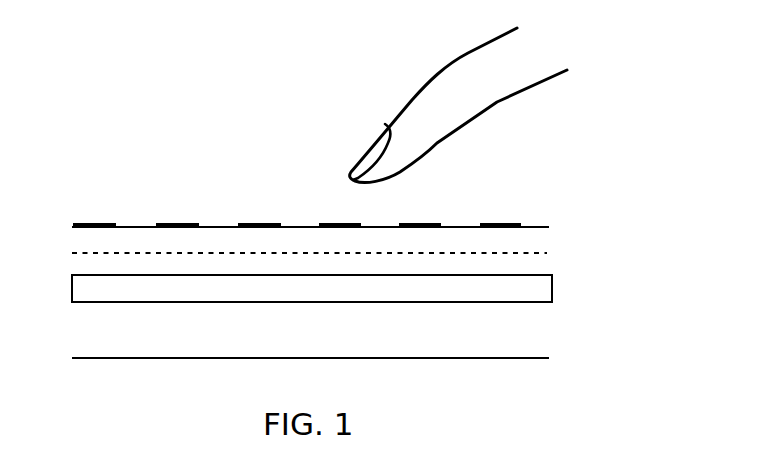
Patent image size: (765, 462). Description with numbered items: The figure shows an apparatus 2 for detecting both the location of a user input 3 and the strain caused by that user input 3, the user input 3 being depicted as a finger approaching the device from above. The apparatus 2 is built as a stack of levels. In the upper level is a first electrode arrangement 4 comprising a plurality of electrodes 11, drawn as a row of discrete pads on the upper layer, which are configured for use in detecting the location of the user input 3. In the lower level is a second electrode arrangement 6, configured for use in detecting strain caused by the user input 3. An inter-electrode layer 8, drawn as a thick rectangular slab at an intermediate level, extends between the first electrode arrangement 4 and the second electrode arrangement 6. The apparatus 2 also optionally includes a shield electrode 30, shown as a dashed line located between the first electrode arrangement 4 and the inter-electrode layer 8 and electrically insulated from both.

The apparatus 2 is at (658, 187).
The user input 3 is at (410, 98).
The first electrode arrangement 4 is at (72, 227).
The second electrode arrangement 6 is at (72, 358).
The inter-electrode layer 8 is at (72, 282).
The electrodes 11 is at (94, 223).
The shield electrode 30 is at (548, 257).